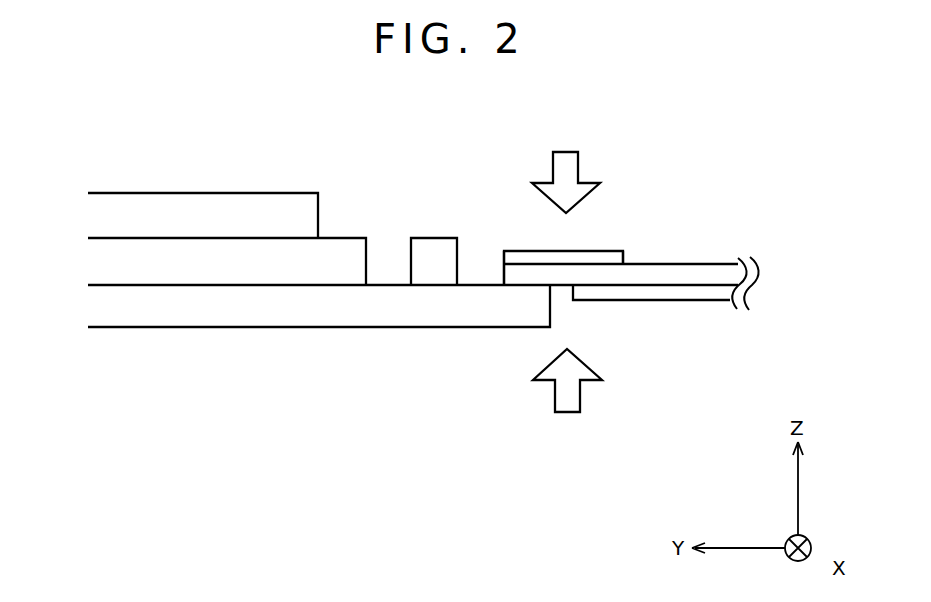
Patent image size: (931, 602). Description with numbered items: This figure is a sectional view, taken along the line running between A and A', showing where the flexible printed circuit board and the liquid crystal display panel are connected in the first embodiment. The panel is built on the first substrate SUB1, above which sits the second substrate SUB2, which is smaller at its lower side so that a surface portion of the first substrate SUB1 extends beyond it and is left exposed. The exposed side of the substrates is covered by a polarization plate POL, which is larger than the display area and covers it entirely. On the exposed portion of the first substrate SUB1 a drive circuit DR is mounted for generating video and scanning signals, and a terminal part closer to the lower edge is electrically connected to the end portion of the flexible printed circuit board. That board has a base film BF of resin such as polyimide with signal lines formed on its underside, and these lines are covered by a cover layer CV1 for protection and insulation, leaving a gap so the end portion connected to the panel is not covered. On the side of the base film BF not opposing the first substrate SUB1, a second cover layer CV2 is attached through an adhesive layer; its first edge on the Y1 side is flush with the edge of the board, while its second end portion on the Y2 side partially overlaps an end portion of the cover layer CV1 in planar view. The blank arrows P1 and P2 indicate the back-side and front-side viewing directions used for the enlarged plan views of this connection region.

The polarization plate POL is at (187, 212).
The second substrate SUB2 is at (185, 270).
The first substrate SUB1 is at (302, 308).
The drive circuit DR is at (435, 250).
The second cover layer CV2 is at (567, 250).
The base film BF is at (706, 264).
The cover layer CV1 is at (706, 301).
The Y1 side Y1 is at (487, 252).
The Y2 side Y2 is at (637, 238).
The blank arrow P1 is at (567, 409).
The blank arrow P2 is at (566, 162).
The line A-A' end A is at (72, 330).
The line A-A' end A' is at (727, 331).